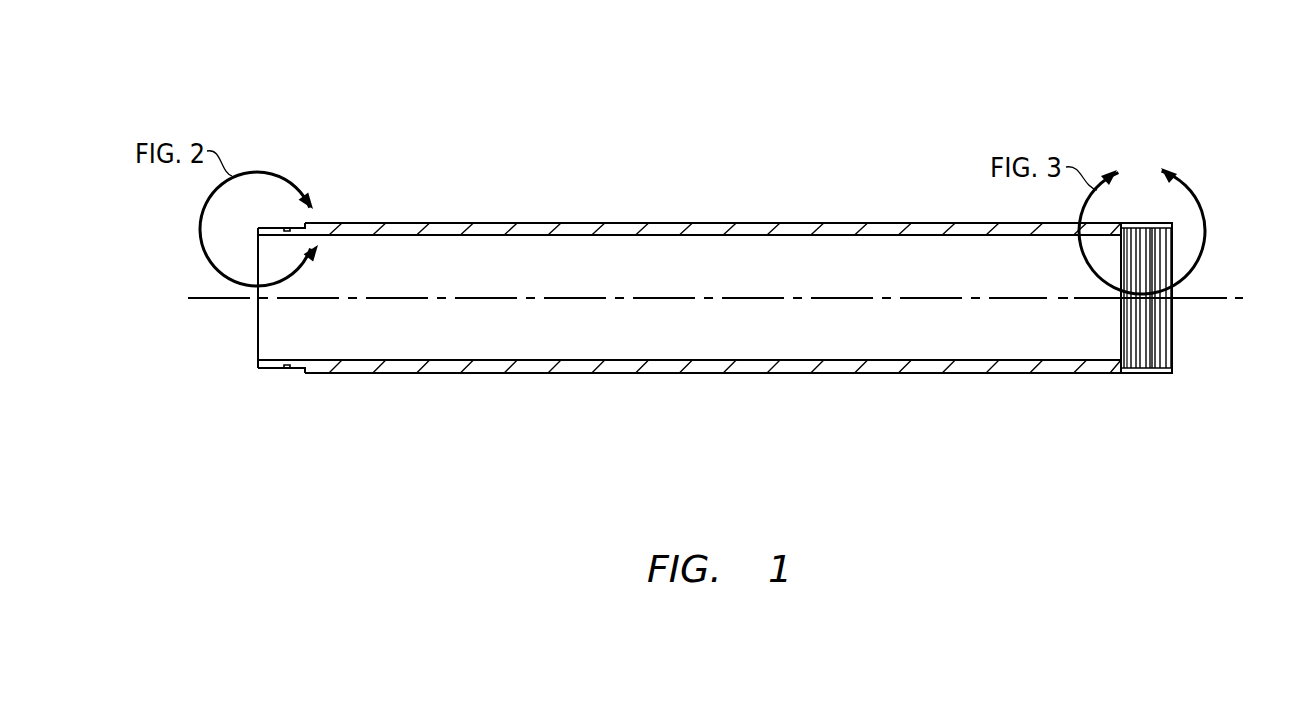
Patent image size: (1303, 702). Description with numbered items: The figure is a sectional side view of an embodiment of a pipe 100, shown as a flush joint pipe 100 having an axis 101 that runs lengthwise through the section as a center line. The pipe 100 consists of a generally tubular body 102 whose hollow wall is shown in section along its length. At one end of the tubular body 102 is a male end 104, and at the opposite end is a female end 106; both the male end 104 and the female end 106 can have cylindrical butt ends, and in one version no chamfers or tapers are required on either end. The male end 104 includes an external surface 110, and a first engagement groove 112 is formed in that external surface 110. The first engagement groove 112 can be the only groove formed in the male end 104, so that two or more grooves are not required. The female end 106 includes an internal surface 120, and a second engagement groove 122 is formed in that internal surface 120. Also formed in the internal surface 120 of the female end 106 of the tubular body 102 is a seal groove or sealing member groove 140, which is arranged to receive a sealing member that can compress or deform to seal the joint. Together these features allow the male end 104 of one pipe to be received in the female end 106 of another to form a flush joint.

The pipe 100 is at (887, 80).
The axis 101 is at (768, 297).
The tubular body 102 is at (778, 374).
The male end 104 is at (320, 288).
The female end 106 is at (1182, 320).
The external surface 110 is at (270, 222).
The first engagement groove 112 is at (289, 225).
The internal surface 120 is at (1160, 233).
The second engagement groove 122 is at (1158, 224).
The sealing member groove 140 is at (1134, 226).